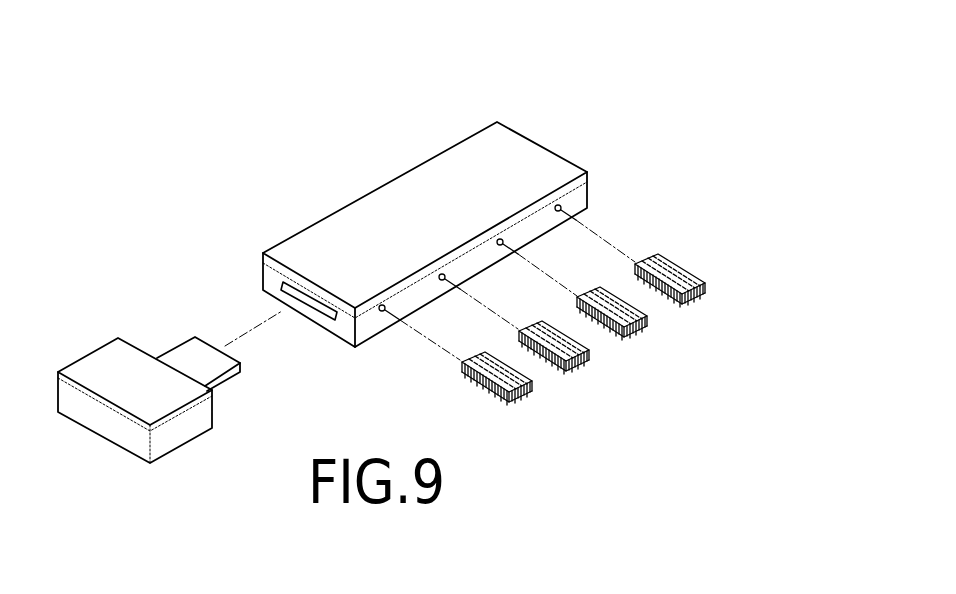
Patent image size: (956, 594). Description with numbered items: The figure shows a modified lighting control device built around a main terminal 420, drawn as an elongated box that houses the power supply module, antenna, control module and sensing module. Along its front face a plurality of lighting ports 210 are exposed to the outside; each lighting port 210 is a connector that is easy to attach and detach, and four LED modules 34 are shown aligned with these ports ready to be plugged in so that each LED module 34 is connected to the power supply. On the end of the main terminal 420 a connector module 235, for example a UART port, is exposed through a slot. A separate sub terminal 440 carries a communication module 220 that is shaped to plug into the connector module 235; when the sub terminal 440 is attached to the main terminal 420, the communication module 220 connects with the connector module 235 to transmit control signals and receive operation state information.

The main terminal 420 is at (507, 135).
The lighting port 210 is at (563, 209).
The connector module 235 is at (306, 301).
The communication module 220 is at (187, 353).
The sub terminal 440 is at (103, 427).
The LED modules 34 is at (708, 298).